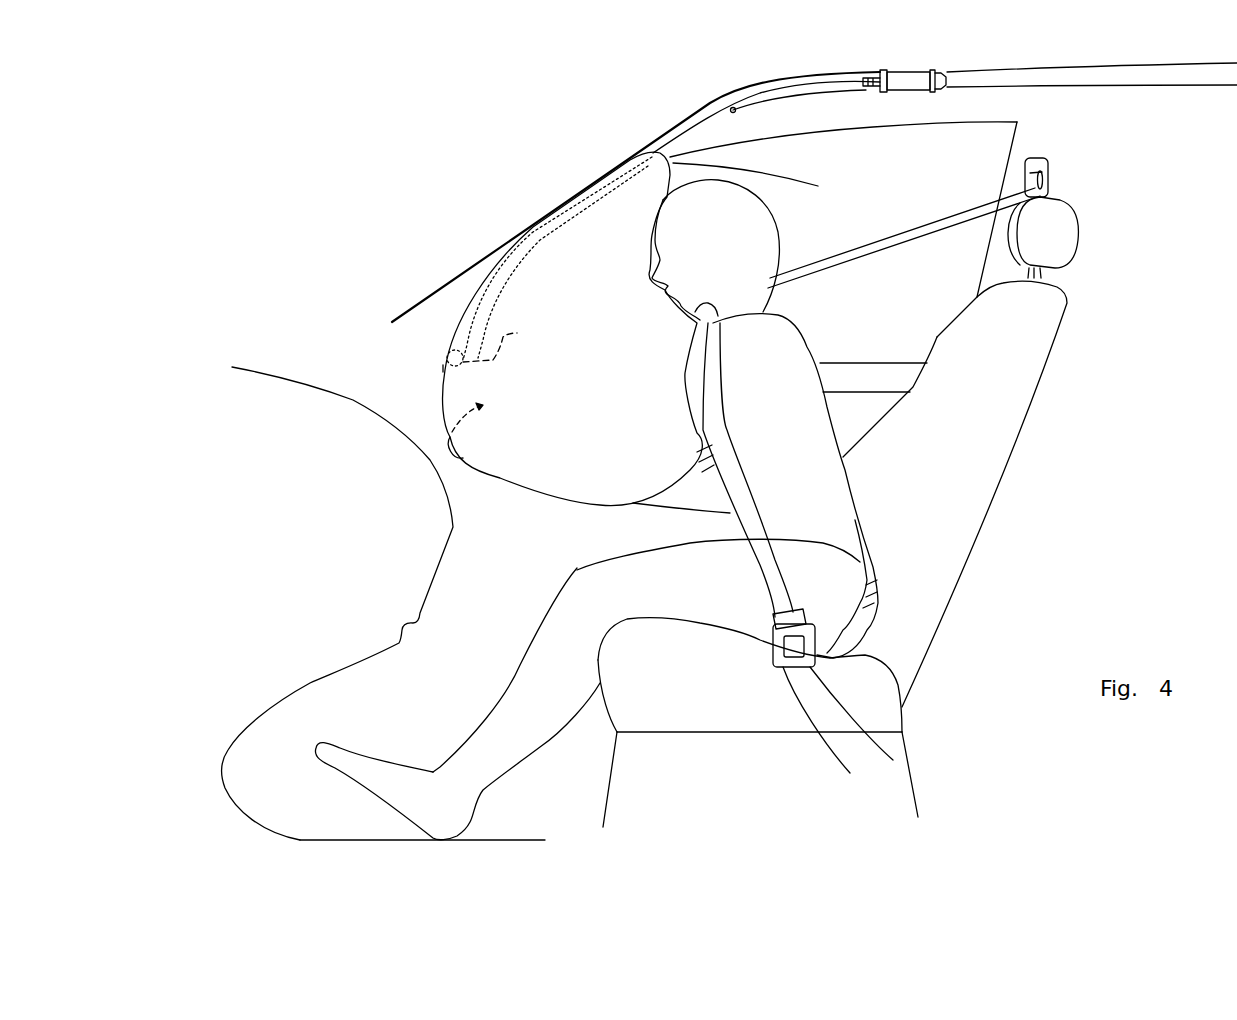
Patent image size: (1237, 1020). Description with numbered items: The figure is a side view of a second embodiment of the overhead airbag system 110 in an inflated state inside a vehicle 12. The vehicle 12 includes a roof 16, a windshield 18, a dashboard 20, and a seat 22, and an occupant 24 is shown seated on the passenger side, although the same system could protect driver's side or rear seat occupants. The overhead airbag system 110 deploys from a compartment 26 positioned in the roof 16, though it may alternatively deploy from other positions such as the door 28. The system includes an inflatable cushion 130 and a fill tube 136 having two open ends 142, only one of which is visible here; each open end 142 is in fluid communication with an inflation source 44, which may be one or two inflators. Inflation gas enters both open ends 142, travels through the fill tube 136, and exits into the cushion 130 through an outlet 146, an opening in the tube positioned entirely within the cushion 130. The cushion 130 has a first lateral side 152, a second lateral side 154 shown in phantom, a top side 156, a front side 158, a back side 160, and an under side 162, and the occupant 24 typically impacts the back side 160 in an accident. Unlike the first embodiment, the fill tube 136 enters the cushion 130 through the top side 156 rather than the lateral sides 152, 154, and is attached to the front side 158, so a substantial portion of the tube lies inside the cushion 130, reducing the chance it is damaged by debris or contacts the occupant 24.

The vehicle 12 is at (348, 439).
The roof 16 is at (1072, 74).
The windshield 18 is at (442, 295).
The dashboard 20 is at (433, 463).
The seat 22 is at (970, 431).
The occupant 24 is at (788, 443).
The compartment 26 is at (743, 85).
The door 28 is at (862, 380).
The inflation source 44 is at (915, 72).
The overhead airbag system 110 is at (527, 177).
The inflatable cushion 130 is at (590, 383).
The fill tube 136 is at (700, 122).
The open end 142 is at (868, 74).
The outlet 146 is at (504, 342).
The first lateral side 152 is at (560, 470).
The second lateral side 154 is at (462, 457).
The top side 156 is at (761, 181).
The front side 158 is at (443, 365).
The back side 160 is at (715, 327).
The under side 162 is at (600, 507).